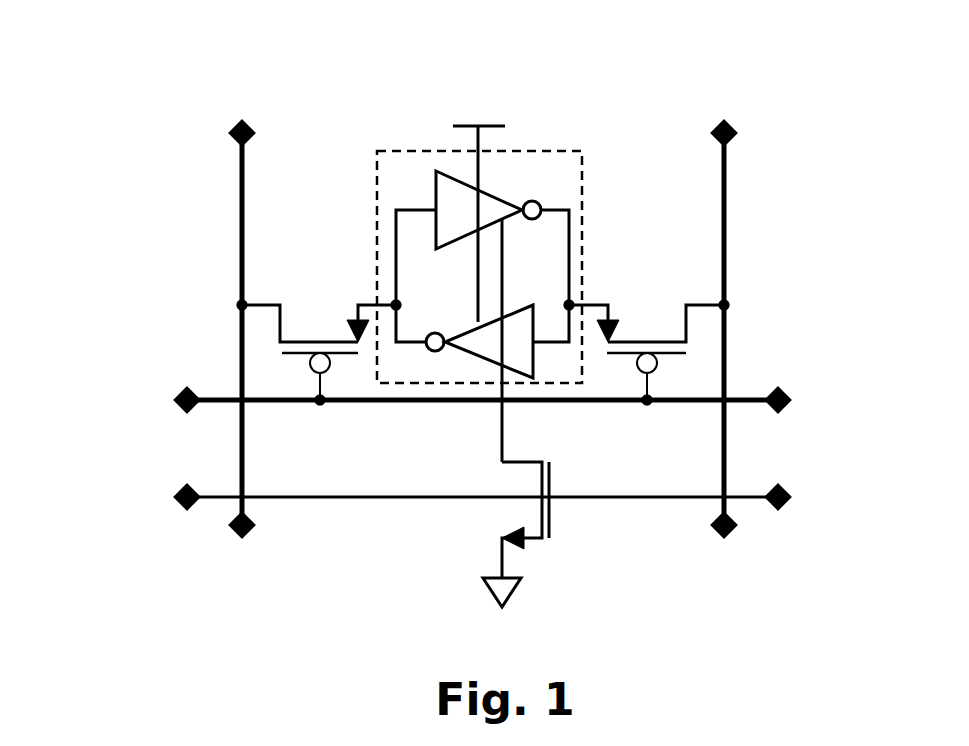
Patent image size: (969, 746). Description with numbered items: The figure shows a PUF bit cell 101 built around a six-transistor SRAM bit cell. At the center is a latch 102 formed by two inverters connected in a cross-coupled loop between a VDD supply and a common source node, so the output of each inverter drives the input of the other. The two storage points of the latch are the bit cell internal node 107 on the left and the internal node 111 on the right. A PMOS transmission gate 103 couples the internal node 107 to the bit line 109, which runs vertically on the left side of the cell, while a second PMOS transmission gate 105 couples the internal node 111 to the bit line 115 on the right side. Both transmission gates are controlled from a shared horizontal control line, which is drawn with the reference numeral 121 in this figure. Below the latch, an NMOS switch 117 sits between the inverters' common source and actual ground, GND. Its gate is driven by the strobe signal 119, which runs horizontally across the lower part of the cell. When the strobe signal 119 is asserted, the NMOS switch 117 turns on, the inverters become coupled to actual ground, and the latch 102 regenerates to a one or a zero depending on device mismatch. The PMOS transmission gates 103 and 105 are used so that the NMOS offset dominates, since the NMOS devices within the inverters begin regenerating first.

The PUF bit cell 101 is at (300, 50).
The latch 102 is at (582, 151).
The transmission gate 103 is at (342, 355).
The transmission gate 105 is at (610, 355).
The internal node 107 is at (395, 304).
The bit line 109 is at (242, 228).
The internal node 111 is at (569, 304).
The bit line 115 is at (724, 222).
The NMOS switch 117 is at (552, 517).
The strobe signal 119 is at (285, 497).
The conn_n line 121 is at (217, 400).